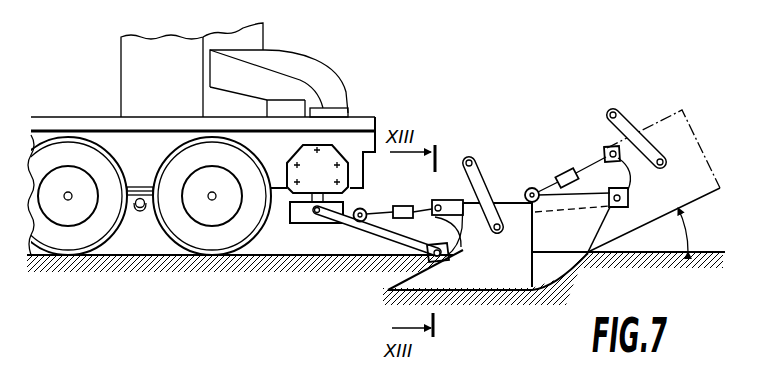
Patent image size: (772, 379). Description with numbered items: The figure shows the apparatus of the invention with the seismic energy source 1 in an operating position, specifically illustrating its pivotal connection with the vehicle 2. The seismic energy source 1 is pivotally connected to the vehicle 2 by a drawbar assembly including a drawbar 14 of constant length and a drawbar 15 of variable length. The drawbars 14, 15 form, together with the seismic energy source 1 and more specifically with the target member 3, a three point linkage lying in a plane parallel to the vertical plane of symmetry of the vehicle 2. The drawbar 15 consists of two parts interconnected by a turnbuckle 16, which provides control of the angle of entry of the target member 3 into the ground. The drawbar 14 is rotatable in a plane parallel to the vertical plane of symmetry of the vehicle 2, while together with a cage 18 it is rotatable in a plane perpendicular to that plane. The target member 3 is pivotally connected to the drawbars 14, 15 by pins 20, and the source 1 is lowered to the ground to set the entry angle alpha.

The seismic energy source 1 is at (499, 186).
The vehicle 2 is at (103, 127).
The target member 3 is at (516, 201).
The drawbar 14 is at (386, 243).
The drawbar 15 is at (372, 210).
The turnbuckle 16 is at (397, 207).
The cage 18 is at (311, 220).
The pins 20 is at (447, 202).